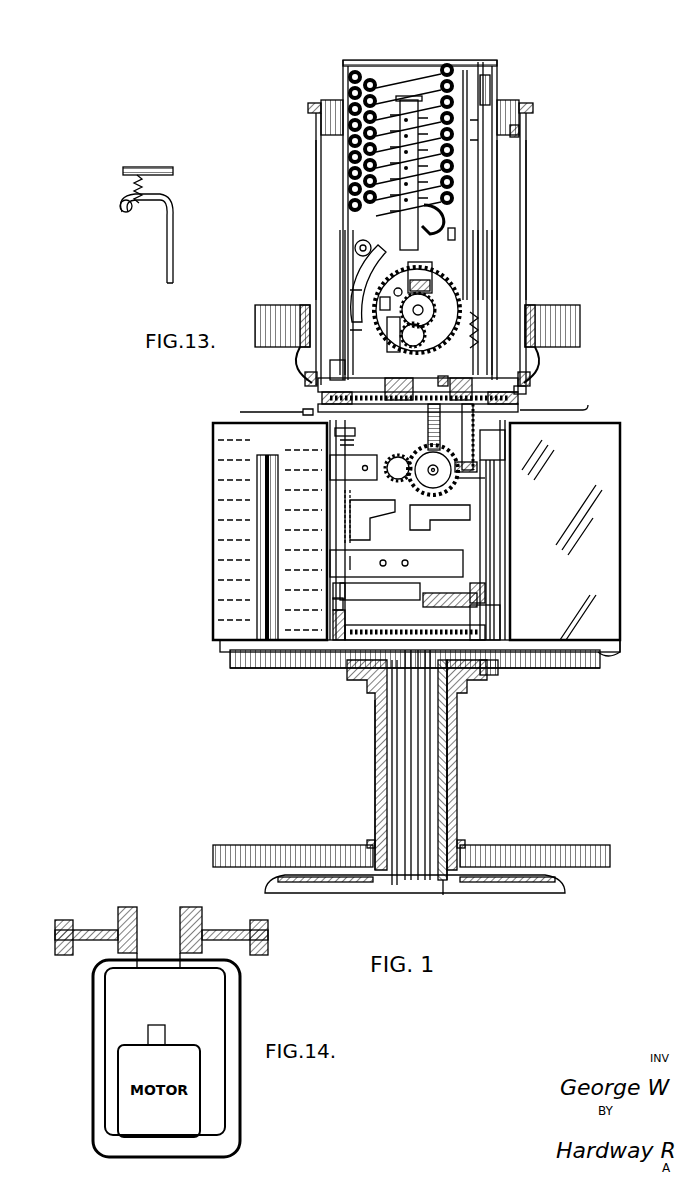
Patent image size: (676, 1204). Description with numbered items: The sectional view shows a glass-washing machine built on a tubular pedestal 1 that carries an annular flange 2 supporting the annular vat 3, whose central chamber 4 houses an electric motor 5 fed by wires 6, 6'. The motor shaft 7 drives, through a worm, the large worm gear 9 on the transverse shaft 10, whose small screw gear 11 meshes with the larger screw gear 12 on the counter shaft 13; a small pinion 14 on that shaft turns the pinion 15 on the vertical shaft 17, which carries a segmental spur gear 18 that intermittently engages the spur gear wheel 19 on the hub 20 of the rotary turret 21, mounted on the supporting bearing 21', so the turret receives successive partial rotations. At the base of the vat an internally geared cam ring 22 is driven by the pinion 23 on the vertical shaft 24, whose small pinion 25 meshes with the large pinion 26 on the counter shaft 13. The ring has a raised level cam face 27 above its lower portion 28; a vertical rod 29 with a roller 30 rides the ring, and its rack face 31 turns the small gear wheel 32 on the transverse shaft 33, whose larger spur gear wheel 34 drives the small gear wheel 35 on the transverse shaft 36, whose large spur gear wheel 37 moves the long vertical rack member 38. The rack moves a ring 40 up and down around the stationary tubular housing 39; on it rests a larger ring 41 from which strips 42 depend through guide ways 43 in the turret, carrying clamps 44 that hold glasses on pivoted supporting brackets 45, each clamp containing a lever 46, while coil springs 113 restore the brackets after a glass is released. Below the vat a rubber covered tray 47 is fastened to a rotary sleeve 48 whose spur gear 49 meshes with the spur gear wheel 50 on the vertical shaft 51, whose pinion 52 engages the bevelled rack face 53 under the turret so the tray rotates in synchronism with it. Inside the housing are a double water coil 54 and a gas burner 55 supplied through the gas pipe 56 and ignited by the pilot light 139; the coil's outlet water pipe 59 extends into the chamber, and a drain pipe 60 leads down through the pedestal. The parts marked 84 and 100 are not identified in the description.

In FIG. 1, the tubular pedestal 1 is at (445, 722).
In FIG. 1, the annular flange 2 is at (312, 665).
In FIG. 1, the vat 3 is at (213, 489).
In FIG. 1, the central chamber 4 is at (463, 565).
In FIG. 1, the electric motor 5 is at (348, 593).
In FIG. 1, the wire 6 is at (437, 765).
In FIG. 1, the wire 6' is at (465, 770).
In FIG. 1, the motor shaft 7 is at (392, 477).
In FIG. 1, the large worm gear 9 is at (433, 470).
In FIG. 1, the transverse shaft 10 is at (410, 520).
In FIG. 1, the small screw gear 11 is at (485, 476).
In FIG. 1, the larger screw gear 12 is at (459, 437).
In FIG. 1, the counter shaft 13 is at (422, 427).
In FIG. 1, the small pinion 14 is at (353, 467).
In FIG. 1, the pinion 15 is at (335, 430).
In FIG. 1, the vertical shaft 17 is at (405, 386).
In FIG. 1, the segmental spur gear 18 is at (338, 372).
In FIG. 1, the spur gear wheel 19 is at (472, 385).
In FIG. 1, the hub 20 is at (448, 380).
In FIG. 14, the hub 20 is at (205, 915).
In FIG. 1, the rotary turret 21 is at (539, 388).
In FIG. 14, the rotary turret 21 is at (86, 920).
In FIG. 1, the supporting bearing 21' is at (487, 277).
In FIG. 14, the supporting bearing 21' is at (160, 917).
In FIG. 1, the internally geared cam ring 22 is at (333, 628).
In FIG. 1, the pinion 23 is at (500, 630).
In FIG. 1, the vertical shaft 24 is at (477, 596).
In FIG. 1, the small pinion 25 is at (477, 468).
In FIG. 1, the large pinion 26 is at (493, 445).
In FIG. 1, the cam face 27 is at (360, 598).
In FIG. 1, the lower portion 28 is at (485, 608).
In FIG. 1, the vertical rod 29 is at (330, 534).
In FIG. 1, the roller 30 is at (333, 604).
In FIG. 1, the rack face 31 is at (396, 290).
In FIG. 1, the small gear wheel 32 is at (423, 335).
In FIG. 1, the transverse shaft 33 is at (390, 345).
In FIG. 1, the larger spur gear wheel 34 is at (428, 318).
In FIG. 1, the small gear wheel 35 is at (424, 308).
In FIG. 1, the transverse shaft 36 is at (386, 306).
In FIG. 1, the large spur gear wheel 37 is at (350, 298).
In FIG. 1, the rack member 38 is at (478, 297).
In FIG. 1, the tubular housing 39 is at (497, 180).
In FIG. 1, the ring 40 is at (519, 131).
In FIG. 1, the larger ring 41 is at (533, 106).
In FIG. 1, the strips 42 is at (526, 200).
In FIG. 1, the guide ways 43 is at (305, 378).
In FIG. 1, the clamps 44 is at (255, 318).
In FIG. 1, the supporting brackets 45 is at (417, 405).
In FIG. 13, the supporting brackets 45 is at (175, 257).
In FIG. 1, the lever 46 is at (295, 352).
In FIG. 1, the rubber covered tray 47 is at (580, 846).
In FIG. 1, the rotary sleeve 48 is at (375, 790).
In FIG. 1, the spur gear 49 is at (347, 680).
In FIG. 1, the spur gear wheel 50 is at (498, 679).
In FIG. 1, the vertical shaft 51 is at (496, 520).
In FIG. 1, the pinion 52 is at (520, 400).
In FIG. 1, the bevelled rack face 53 is at (322, 398).
In FIG. 1, the double water coil 54 is at (346, 95).
In FIG. 1, the gas burner 55 is at (404, 213).
In FIG. 1, the gas pipe 56 is at (430, 826).
In FIG. 1, the outlet water pipe 59 is at (355, 270).
In FIG. 1, the drain pipe 60 is at (392, 885).
In FIG. 1, the tube 84 is at (257, 586).
In FIG. 1, the housing 100 is at (585, 672).
In FIG. 13, the coil springs 113 is at (130, 196).
In FIG. 1, the pilot light 139 is at (456, 234).